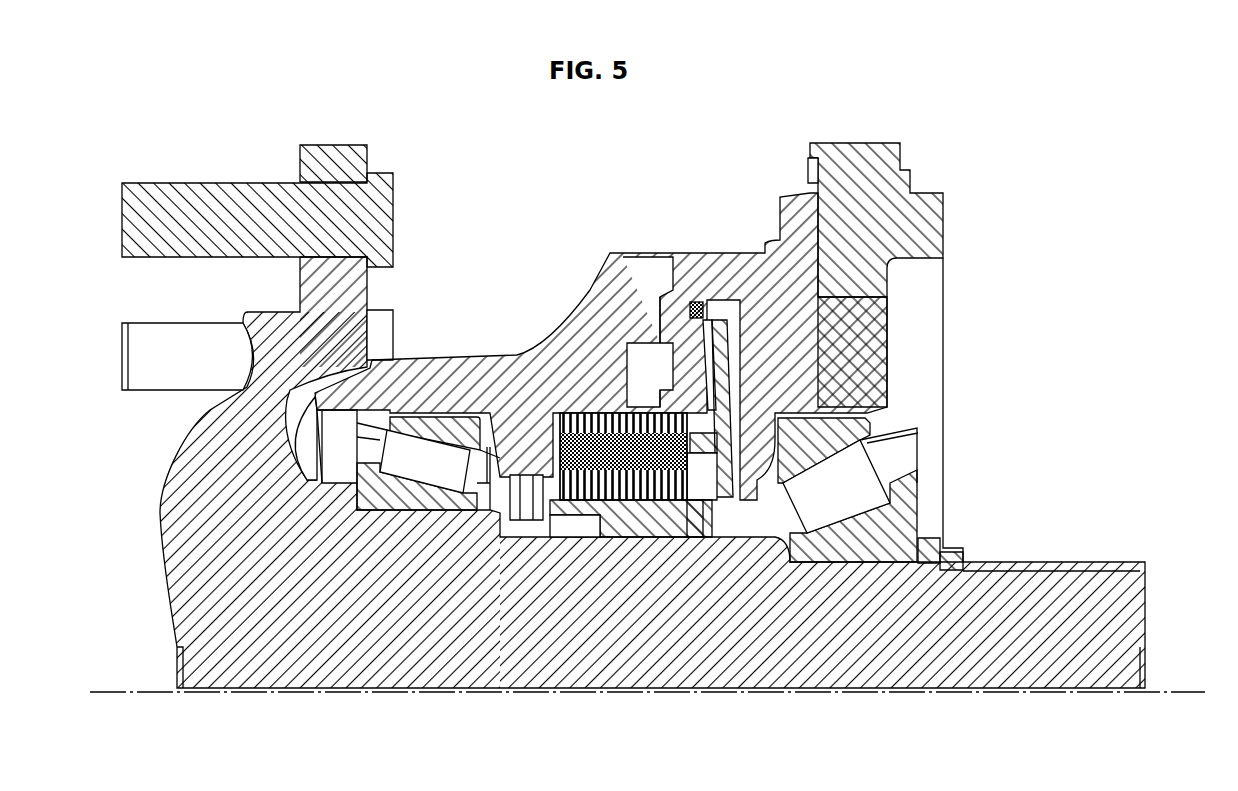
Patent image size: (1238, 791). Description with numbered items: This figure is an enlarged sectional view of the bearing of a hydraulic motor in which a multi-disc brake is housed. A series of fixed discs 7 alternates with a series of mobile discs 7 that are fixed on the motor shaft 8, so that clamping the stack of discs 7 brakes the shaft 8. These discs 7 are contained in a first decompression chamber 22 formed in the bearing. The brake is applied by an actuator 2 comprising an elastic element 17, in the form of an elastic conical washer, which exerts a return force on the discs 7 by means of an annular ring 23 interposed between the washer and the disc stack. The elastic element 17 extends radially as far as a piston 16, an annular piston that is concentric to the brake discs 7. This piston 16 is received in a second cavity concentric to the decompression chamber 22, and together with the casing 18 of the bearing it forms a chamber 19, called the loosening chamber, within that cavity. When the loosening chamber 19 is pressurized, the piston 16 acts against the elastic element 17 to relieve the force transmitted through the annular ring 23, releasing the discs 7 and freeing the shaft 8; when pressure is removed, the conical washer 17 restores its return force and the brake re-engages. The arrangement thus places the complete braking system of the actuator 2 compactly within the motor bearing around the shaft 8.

The actuator 2 is at (720, 367).
The discs 7 is at (615, 458).
The motor shaft 8 is at (610, 643).
The piston 16 is at (687, 357).
The elastic element 17 is at (735, 325).
The casing 18 is at (518, 380).
The loosening chamber 19 is at (653, 350).
The first decompression chamber 22 is at (522, 505).
The annular ring 23 is at (712, 515).